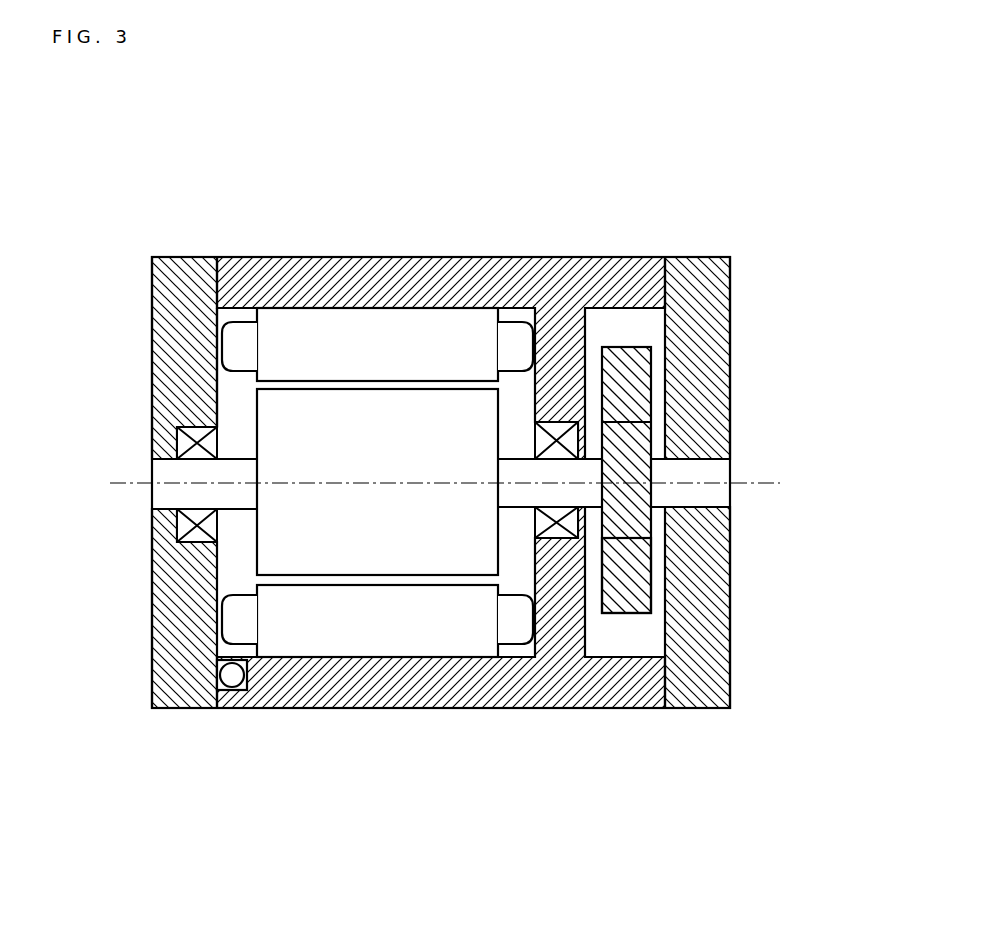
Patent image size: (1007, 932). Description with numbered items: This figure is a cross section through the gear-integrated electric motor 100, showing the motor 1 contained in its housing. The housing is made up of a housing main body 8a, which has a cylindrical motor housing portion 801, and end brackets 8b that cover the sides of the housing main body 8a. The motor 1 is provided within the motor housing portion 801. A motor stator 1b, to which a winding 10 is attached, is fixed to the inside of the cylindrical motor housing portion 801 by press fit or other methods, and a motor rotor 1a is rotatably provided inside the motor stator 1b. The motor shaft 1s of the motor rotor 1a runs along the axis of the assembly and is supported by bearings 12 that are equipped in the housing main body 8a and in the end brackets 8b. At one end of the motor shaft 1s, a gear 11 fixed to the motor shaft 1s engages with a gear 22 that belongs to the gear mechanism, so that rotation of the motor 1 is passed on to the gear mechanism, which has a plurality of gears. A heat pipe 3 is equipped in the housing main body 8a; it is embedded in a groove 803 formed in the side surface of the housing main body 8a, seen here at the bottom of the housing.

The gear-integrated electric motor 100 is at (445, 103).
The housing main body 8a is at (413, 282).
The end brackets 8b is at (190, 273).
The motor housing portion 801 is at (240, 406).
The motor 1 is at (385, 569).
The motor rotor 1a is at (375, 553).
The motor stator 1b is at (430, 632).
The winding 10 is at (508, 627).
The motor shaft 1s is at (720, 468).
The bearings 12 is at (180, 525).
The gear 11 is at (640, 522).
The gear 22 is at (640, 577).
The groove 803 is at (243, 688).
The heat pipe 3 is at (228, 680).